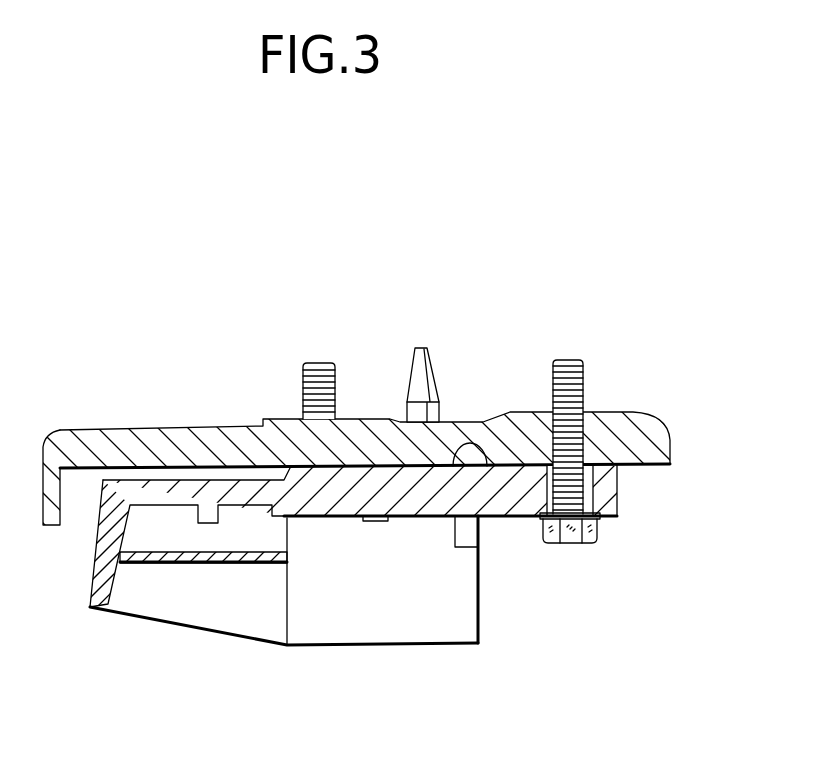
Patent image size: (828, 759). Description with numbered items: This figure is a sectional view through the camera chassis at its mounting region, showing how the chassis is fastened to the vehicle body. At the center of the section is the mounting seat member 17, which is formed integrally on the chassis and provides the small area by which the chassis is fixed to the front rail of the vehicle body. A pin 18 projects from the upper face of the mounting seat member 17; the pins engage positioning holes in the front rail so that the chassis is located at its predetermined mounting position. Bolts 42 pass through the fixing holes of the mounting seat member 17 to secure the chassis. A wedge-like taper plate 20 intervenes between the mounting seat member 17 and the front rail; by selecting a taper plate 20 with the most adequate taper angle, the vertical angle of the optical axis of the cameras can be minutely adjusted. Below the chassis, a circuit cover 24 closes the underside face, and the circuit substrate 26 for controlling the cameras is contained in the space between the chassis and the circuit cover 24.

The mounting seat member 17 is at (488, 466).
The pin 18 is at (437, 367).
The taper plate 20 is at (663, 427).
The circuit cover 24 is at (378, 648).
The circuit substrate 26 is at (212, 557).
The bolt 42 is at (322, 365).